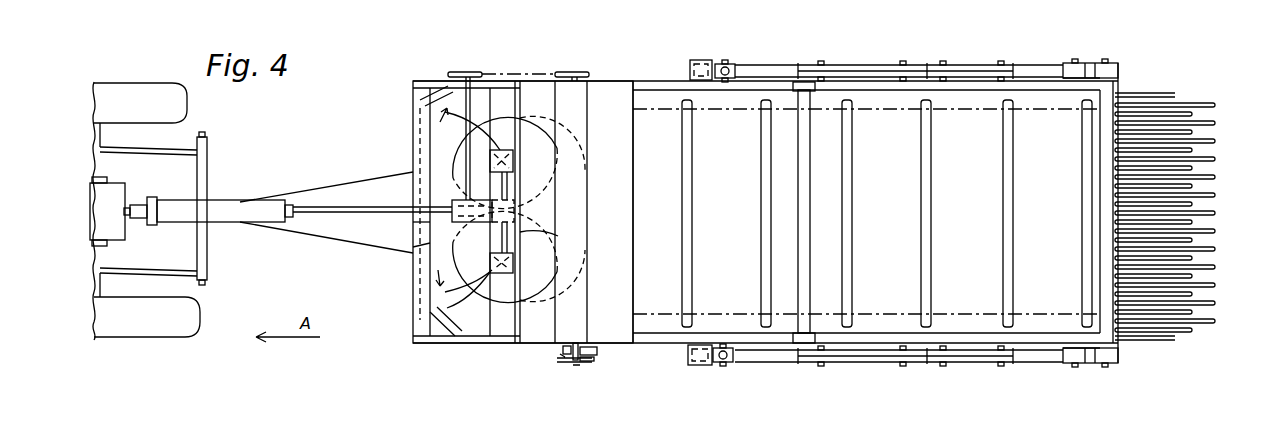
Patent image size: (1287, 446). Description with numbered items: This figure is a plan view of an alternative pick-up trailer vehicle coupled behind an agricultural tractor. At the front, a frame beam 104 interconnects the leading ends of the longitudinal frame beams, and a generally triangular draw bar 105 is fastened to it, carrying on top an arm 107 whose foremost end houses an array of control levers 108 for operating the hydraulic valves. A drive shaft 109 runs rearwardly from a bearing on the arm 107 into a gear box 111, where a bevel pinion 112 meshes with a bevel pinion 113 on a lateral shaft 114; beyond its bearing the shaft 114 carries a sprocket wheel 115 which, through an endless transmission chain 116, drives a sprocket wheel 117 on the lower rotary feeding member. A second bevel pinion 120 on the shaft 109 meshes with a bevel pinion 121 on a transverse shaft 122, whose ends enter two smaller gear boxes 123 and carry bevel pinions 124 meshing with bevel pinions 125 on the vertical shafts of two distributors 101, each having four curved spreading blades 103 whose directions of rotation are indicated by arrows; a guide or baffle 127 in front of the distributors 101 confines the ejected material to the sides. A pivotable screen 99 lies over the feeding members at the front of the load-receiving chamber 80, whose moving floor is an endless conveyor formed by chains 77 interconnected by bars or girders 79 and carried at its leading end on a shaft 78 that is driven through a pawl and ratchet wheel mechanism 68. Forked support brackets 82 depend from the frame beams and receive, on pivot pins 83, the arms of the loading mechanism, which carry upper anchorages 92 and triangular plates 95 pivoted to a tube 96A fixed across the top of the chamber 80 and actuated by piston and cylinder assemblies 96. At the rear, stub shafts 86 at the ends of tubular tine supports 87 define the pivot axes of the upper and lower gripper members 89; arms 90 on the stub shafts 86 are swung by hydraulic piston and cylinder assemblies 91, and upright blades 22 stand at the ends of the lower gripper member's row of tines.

The upright blades 22 is at (1186, 216).
The pawl and ratchet wheel mechanism 68 is at (596, 355).
The endless chains 77 is at (700, 308).
The shaft 78 is at (571, 365).
The bars or girders 79 is at (850, 290).
The load-receiving chamber 80 is at (729, 203).
The depending forked support bracket 82 is at (692, 60).
The pivot pins 83 is at (722, 60).
The stub shafts 86 is at (1115, 62).
The tubular tine supports 87 is at (1120, 86).
The gripper members 89 is at (1223, 143).
The arms 90 is at (1090, 368).
The hydraulic piston and cylinder assembly 91 is at (1034, 62).
The upper anchorages 92 is at (968, 62).
The substantially triangular plates 95 is at (885, 62).
The hydraulic piston and cylinder assembly 96 is at (780, 62).
The tube 96A is at (810, 224).
The pivotable screen 99 is at (626, 184).
The distributors 101 is at (413, 137).
The spreading blades 103 is at (453, 308).
The frame beam 104 is at (413, 93).
The draw bar 105 is at (318, 180).
The arm 107 is at (240, 200).
The control levers 108 is at (147, 188).
The shaft 109 is at (318, 236).
The gear box 111 is at (413, 248).
The bevel pinion 112 is at (413, 224).
The bevel pinion 113 is at (413, 206).
The shaft 114 is at (466, 106).
The sprocket wheel 115 is at (470, 72).
The endless transmission chain 116 is at (525, 74).
The sprocket wheel 117 is at (580, 74).
The second bevel pinion 120 is at (465, 200).
The bevel pinion 121 is at (520, 212).
The shaft 122 is at (552, 236).
The smaller gear boxes 123 is at (557, 148).
The bevel pinions 124 is at (555, 172).
The bevel pinions 125 is at (504, 212).
The guide or baffle 127 is at (413, 284).